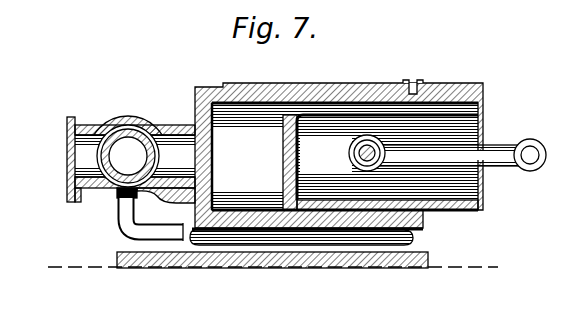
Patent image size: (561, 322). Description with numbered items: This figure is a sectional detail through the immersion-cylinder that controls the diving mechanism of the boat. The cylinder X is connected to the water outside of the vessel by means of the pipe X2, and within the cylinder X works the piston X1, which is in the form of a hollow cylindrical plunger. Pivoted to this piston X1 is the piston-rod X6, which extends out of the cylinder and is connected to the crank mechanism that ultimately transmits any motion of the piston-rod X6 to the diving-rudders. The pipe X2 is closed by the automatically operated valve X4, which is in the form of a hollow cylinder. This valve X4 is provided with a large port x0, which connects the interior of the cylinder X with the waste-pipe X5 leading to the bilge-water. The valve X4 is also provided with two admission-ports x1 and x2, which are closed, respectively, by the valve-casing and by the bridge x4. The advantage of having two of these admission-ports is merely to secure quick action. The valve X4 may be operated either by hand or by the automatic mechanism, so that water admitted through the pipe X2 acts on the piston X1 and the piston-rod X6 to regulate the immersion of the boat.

The cylinder X is at (339, 154).
The piston X1 is at (380, 162).
The pipe X2 is at (67, 125).
The bridge x4 is at (97, 125).
The admission-port x1 is at (125, 130).
The admission-port x2 is at (128, 156).
The port x0 is at (135, 156).
The valve X4 is at (108, 177).
The waste-pipe X5 is at (163, 232).
The piston-rod X6 is at (483, 150).